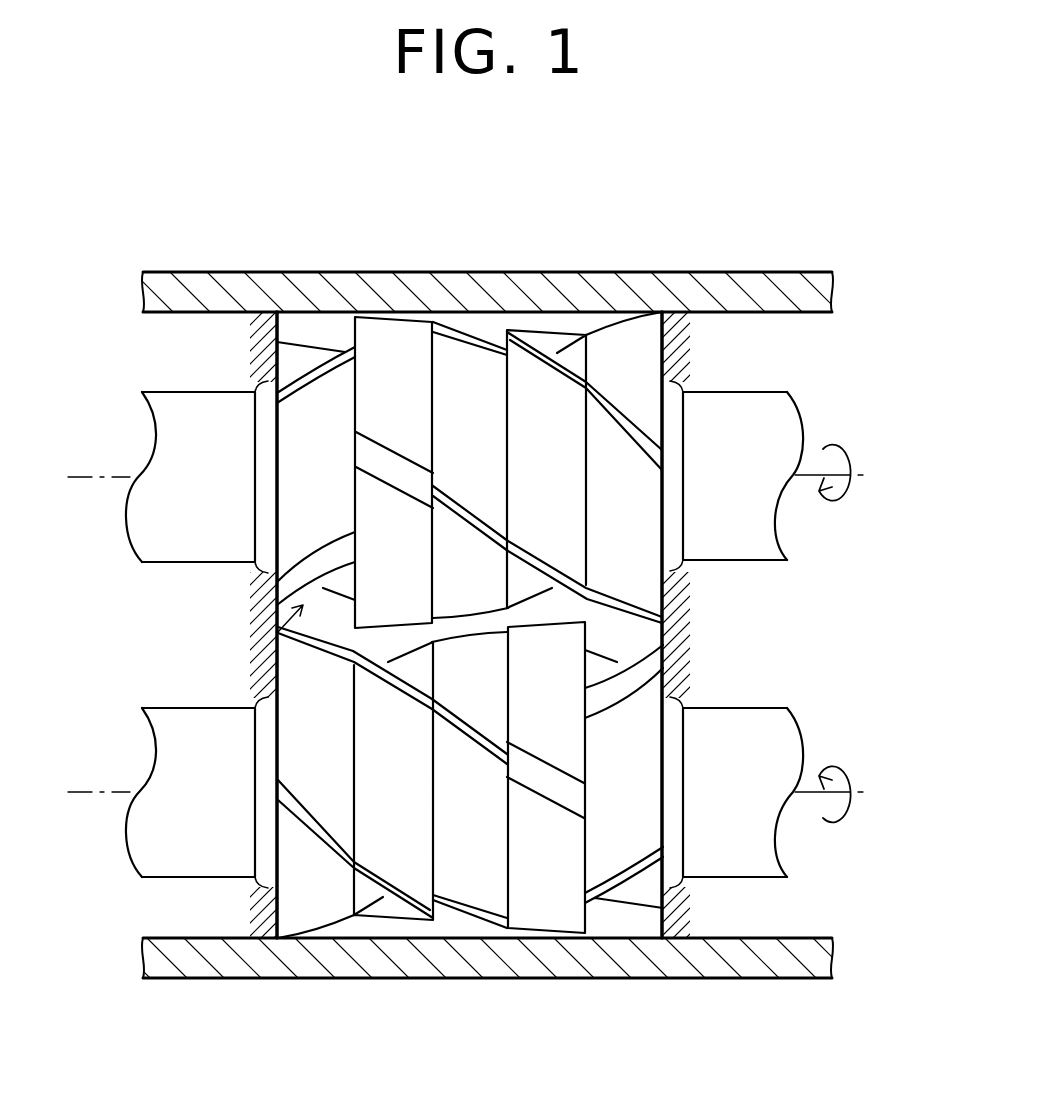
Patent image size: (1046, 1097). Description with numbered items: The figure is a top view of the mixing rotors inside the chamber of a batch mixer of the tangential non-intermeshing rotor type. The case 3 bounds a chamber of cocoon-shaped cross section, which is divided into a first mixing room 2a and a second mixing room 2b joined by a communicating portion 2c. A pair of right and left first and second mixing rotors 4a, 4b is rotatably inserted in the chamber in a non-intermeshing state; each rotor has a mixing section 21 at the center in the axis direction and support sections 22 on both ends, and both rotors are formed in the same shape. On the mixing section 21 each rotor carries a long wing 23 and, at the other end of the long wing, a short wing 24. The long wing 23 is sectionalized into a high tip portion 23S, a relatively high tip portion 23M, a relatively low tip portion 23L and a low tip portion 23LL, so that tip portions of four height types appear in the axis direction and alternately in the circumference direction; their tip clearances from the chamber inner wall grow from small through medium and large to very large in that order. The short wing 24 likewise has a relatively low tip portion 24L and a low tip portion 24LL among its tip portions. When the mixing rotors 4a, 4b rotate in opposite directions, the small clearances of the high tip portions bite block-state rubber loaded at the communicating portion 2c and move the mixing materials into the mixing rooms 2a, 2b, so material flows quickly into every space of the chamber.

The case 3 is at (487, 280).
The first mixing room 2a is at (557, 327).
The second mixing room 2b is at (380, 920).
The communicating portion 2c is at (638, 637).
The mixing section 21 is at (275, 640).
The support section 22 is at (747, 543).
The long wing 23 is at (652, 490).
The short wing 24 is at (653, 810).
The first mixing rotor 4a is at (832, 392).
The second mixing rotor 4b is at (832, 729).
The relatively low tip portion 23L is at (620, 598).
The relatively high tip portion 23M is at (545, 562).
The high tip portion 23S is at (470, 512).
The low tip portion 23LL is at (392, 467).
The relatively low tip portion 24L is at (323, 345).
The low tip portion 24LL is at (290, 556).